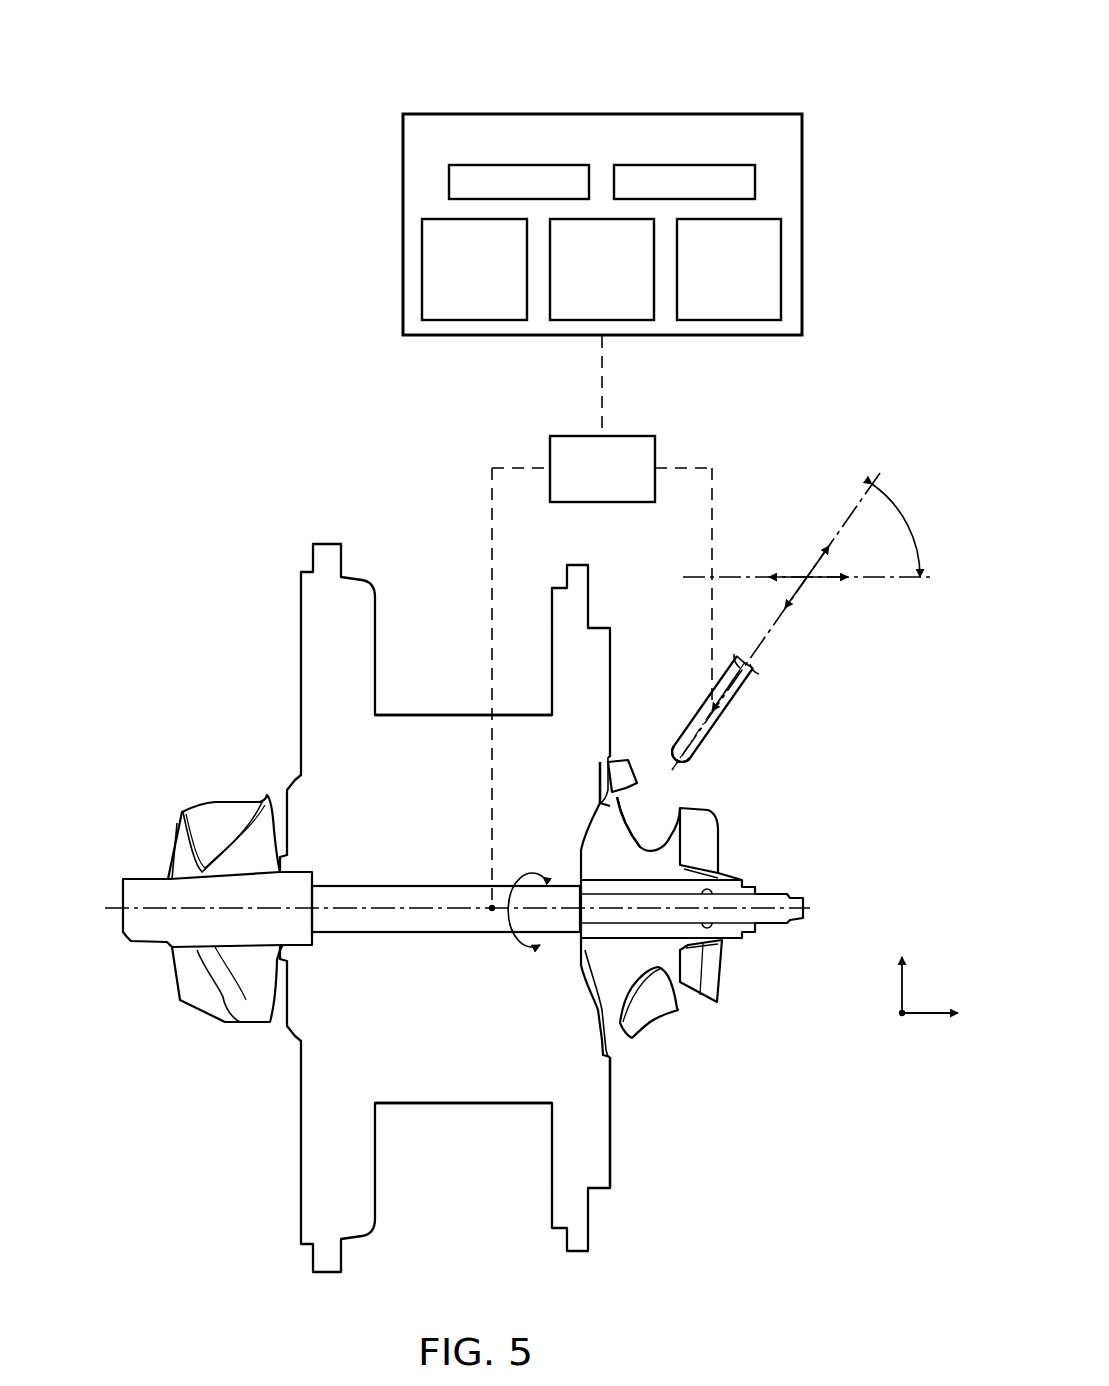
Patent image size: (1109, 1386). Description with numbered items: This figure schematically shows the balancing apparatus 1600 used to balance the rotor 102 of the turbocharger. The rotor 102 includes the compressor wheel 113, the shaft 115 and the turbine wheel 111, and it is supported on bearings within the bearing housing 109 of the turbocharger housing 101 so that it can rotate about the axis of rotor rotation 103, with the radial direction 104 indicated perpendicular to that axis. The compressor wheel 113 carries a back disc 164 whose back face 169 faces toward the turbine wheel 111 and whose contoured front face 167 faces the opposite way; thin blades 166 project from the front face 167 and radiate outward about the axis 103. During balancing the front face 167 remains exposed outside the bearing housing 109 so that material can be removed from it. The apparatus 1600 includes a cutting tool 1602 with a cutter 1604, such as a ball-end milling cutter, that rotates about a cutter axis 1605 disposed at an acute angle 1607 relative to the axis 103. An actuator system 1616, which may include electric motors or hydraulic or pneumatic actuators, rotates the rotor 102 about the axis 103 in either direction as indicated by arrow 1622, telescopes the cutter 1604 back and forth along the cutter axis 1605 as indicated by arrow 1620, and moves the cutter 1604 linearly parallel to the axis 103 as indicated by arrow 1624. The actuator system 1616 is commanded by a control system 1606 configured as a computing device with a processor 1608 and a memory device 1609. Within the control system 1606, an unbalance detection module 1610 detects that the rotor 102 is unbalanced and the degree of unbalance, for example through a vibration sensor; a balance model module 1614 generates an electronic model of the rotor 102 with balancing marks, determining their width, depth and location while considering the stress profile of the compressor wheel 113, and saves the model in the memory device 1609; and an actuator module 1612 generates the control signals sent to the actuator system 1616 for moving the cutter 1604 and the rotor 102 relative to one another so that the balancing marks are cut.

The balancing apparatus 1600 is at (114, 46).
The control system 1606 is at (615, 181).
The processor 1608 is at (755, 182).
The memory device 1609 is at (449, 182).
The unbalance detection module 1610 is at (422, 272).
The actuator module 1612 is at (628, 320).
The balance model module 1614 is at (781, 272).
The actuator system 1616 is at (572, 436).
The cutting tool 1602 is at (765, 714).
The cutter 1604 is at (707, 742).
The cutter axis 1605 is at (765, 635).
The acute angle 1607 is at (937, 508).
The arrow 1620 is at (802, 590).
The arrow 1624 is at (803, 577).
The arrow 1622 is at (527, 863).
The turbocharger housing 101 is at (489, 912).
The bearing housing 109 is at (455, 1103).
The rotor 102 is at (457, 853).
The shaft 115 is at (427, 923).
The turbine wheel 111 is at (217, 908).
The compressor wheel 113 is at (692, 931).
The back disc 164 is at (627, 785).
The blades 166 is at (640, 818).
The front face 167 is at (627, 803).
The back face 169 is at (600, 803).
The axis of rotor rotation 103 is at (923, 1014).
The radial direction 104 is at (900, 990).